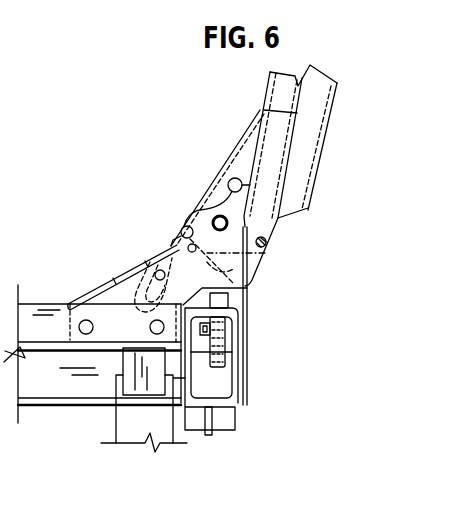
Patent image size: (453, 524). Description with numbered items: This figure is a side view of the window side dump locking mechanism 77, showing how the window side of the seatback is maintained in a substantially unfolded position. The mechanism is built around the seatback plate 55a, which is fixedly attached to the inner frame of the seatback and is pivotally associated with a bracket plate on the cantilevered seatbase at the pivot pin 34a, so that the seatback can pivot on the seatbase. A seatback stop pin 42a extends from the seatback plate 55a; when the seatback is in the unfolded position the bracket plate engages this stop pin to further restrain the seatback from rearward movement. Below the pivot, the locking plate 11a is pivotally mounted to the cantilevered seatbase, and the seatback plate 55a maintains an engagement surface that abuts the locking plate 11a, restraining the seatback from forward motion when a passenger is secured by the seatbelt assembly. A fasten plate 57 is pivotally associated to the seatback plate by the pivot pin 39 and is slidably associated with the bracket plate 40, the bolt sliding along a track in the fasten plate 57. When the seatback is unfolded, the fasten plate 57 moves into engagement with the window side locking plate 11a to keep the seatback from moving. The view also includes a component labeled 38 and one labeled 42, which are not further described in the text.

The window side dump locking mechanism 77 is at (154, 83).
The seatback plate 55a is at (215, 170).
The pivot pin 34a is at (184, 212).
The seatback stop pin 42a is at (221, 215).
The bracket 38 is at (184, 226).
The pivot pin 39 is at (160, 270).
The bracket plate 40 is at (93, 290).
The arm 42 is at (265, 248).
The fasten plate 57 is at (248, 282).
The locking plate 11a is at (240, 306).